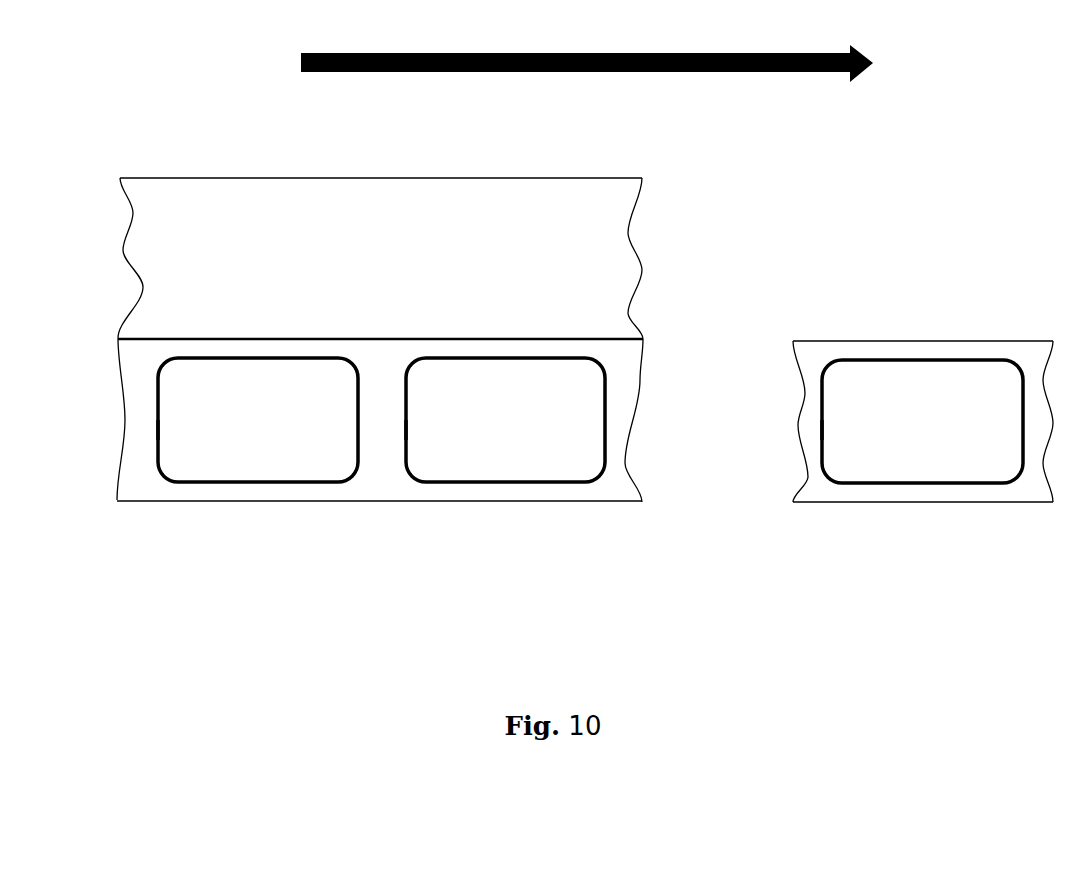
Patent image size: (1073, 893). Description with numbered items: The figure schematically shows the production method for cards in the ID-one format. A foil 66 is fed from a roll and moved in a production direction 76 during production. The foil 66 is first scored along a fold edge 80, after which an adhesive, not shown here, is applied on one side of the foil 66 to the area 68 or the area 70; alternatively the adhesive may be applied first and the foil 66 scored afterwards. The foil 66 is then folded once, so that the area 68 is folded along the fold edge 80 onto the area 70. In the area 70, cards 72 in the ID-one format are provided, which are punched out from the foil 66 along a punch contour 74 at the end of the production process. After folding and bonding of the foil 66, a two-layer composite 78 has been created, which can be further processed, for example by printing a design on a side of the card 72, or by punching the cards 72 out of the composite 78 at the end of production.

The foil 66 is at (377, 178).
The area 68 is at (113, 258).
The area 70 is at (115, 419).
The card 72 is at (258, 430).
The punch contour 74 is at (330, 482).
The production direction 76 is at (578, 72).
The two-layer composite 78 is at (1026, 502).
The fold edge 80 is at (117, 338).